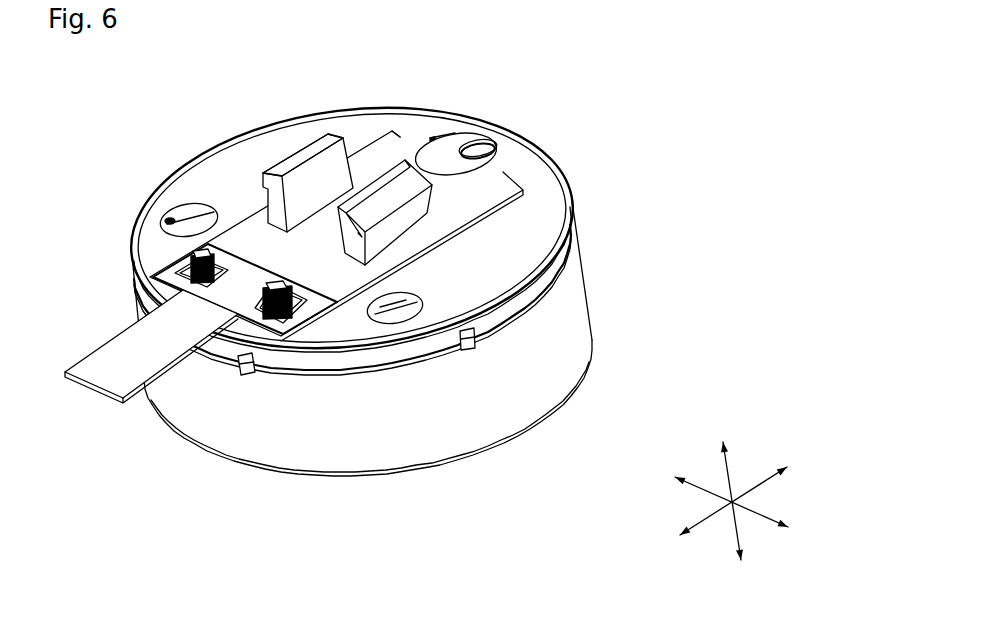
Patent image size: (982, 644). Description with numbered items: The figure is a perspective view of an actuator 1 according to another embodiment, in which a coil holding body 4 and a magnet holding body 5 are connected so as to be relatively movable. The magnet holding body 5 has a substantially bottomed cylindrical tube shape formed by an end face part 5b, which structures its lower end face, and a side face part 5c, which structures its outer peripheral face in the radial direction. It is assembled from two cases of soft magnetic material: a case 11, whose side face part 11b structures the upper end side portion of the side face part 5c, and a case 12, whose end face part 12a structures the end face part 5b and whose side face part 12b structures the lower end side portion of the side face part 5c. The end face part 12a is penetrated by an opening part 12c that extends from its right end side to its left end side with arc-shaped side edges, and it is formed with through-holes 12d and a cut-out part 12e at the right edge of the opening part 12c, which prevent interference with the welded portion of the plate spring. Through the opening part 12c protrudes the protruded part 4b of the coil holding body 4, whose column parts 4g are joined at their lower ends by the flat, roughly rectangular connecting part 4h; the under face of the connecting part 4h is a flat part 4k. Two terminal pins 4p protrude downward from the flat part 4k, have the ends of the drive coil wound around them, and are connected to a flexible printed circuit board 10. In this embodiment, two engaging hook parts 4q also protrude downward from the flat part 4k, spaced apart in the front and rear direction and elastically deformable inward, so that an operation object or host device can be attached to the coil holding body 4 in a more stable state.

The actuator 1 is at (695, 100).
The magnet holding body 5 is at (632, 168).
The end face part 5b is at (223, 163).
The side face part 5c is at (419, 426).
The case 11 is at (580, 250).
The side face part 11b is at (578, 313).
The case 12 is at (570, 188).
The end face part 12a is at (352, 228).
The side face part 12b is at (555, 272).
The opening part 12c is at (448, 140).
The through-holes 12d is at (188, 208).
The cut-out part 12e is at (482, 140).
The coil holding body 4 is at (400, 130).
The protruded part 4b is at (327, 145).
The connecting part 4h is at (303, 115).
The engaging hook parts 4q is at (300, 148).
The flat part 4k is at (473, 206).
The column parts 4g is at (433, 140).
The terminal pins 4p is at (200, 248).
The flexible printed circuit board 10 is at (100, 347).